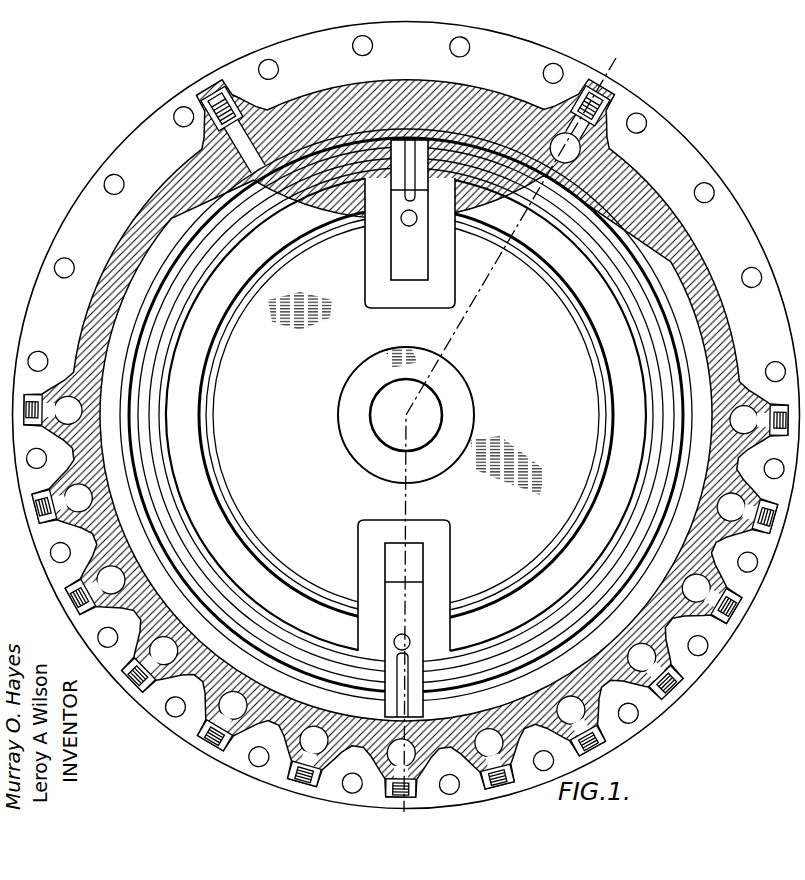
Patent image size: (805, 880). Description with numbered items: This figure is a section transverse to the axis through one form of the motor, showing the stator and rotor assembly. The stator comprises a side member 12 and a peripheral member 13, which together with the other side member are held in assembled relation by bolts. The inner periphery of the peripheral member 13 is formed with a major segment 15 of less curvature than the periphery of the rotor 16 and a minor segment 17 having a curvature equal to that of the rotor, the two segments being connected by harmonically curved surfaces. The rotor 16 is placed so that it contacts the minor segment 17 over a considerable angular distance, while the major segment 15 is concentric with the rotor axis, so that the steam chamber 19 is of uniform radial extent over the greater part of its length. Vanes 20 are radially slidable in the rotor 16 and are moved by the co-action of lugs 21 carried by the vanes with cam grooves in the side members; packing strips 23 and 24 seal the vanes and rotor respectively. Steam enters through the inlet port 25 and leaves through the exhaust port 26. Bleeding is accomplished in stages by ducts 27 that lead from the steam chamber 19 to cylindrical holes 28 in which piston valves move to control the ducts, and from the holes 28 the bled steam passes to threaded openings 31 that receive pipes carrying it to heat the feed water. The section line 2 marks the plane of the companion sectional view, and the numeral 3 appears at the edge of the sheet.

The section line 2 is at (514, 437).
The flange 3 is at (772, 249).
The side member 12 is at (603, 104).
The peripheral member 13 is at (640, 188).
The major segment 15 is at (530, 700).
The rotor 16 is at (406, 414).
The minor segment 17 is at (352, 146).
The steam chamber 19 is at (406, 415).
The vanes 20 is at (400, 248).
The lugs 21 is at (412, 222).
The packing strips for vanes 23 is at (410, 172).
The packing strips for rotor 24 is at (663, 432).
The inlet port 25 is at (618, 148).
The exhaust port 26 is at (248, 140).
The ducts 27 is at (320, 713).
The cylindrical holes 28 is at (300, 748).
The openings 31 is at (640, 682).